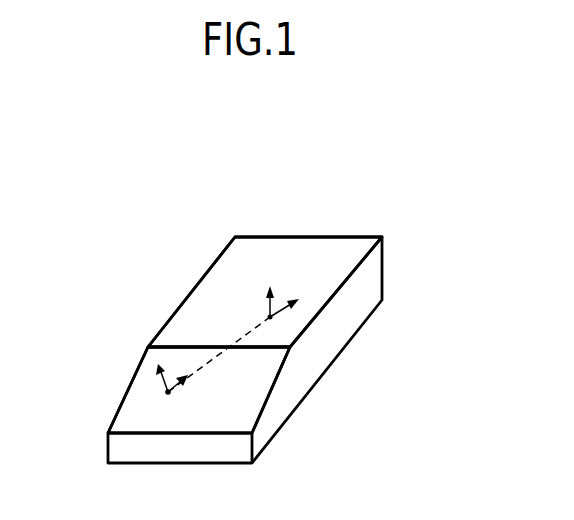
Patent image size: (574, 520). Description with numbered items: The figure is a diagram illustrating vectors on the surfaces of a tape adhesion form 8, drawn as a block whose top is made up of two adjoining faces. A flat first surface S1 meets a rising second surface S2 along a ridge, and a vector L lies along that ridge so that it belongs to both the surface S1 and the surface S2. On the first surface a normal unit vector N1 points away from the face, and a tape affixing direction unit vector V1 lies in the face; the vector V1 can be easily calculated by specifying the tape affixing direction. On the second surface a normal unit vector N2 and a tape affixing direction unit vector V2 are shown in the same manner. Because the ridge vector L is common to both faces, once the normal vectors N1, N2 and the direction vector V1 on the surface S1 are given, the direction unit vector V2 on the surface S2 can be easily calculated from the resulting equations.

The object with bent surface 8 is at (394, 258).
The surface S1 is at (265, 378).
The surface S2 is at (310, 245).
The vector along the ridge L is at (244, 347).
The normal unit vector N1 is at (167, 391).
The tape affixing direction unit vector V1 is at (186, 399).
The normal unit vector N2 is at (267, 287).
The tape affixing direction unit vector V2 is at (296, 291).